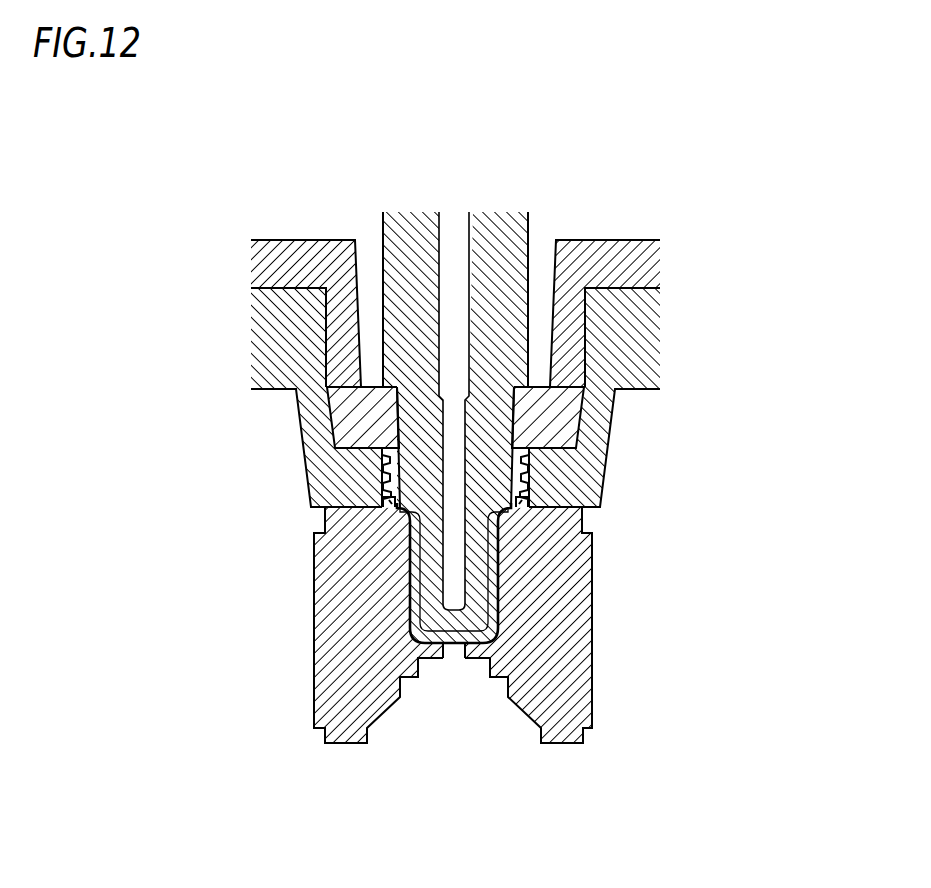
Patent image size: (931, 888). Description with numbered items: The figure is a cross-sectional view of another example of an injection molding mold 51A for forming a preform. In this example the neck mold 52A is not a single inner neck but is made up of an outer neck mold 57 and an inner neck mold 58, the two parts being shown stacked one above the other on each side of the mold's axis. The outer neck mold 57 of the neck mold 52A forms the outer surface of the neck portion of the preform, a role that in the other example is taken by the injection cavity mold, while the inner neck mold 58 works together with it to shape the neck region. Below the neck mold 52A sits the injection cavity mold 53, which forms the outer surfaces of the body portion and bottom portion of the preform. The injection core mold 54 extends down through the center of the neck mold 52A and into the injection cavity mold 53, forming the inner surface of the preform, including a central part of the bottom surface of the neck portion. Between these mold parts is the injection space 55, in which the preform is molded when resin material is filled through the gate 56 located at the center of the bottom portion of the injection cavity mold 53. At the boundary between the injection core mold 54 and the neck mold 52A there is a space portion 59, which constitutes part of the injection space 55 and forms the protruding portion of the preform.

The injection molding mold 51A is at (716, 159).
The neck mold 52A is at (713, 420).
The injection cavity mold 53 is at (573, 633).
The injection core mold 54 is at (427, 559).
The injection space 55 is at (413, 607).
The gate 56 is at (450, 650).
The outer neck mold 57 is at (565, 478).
The inner neck mold 58 is at (552, 430).
The space portion 59 is at (393, 498).